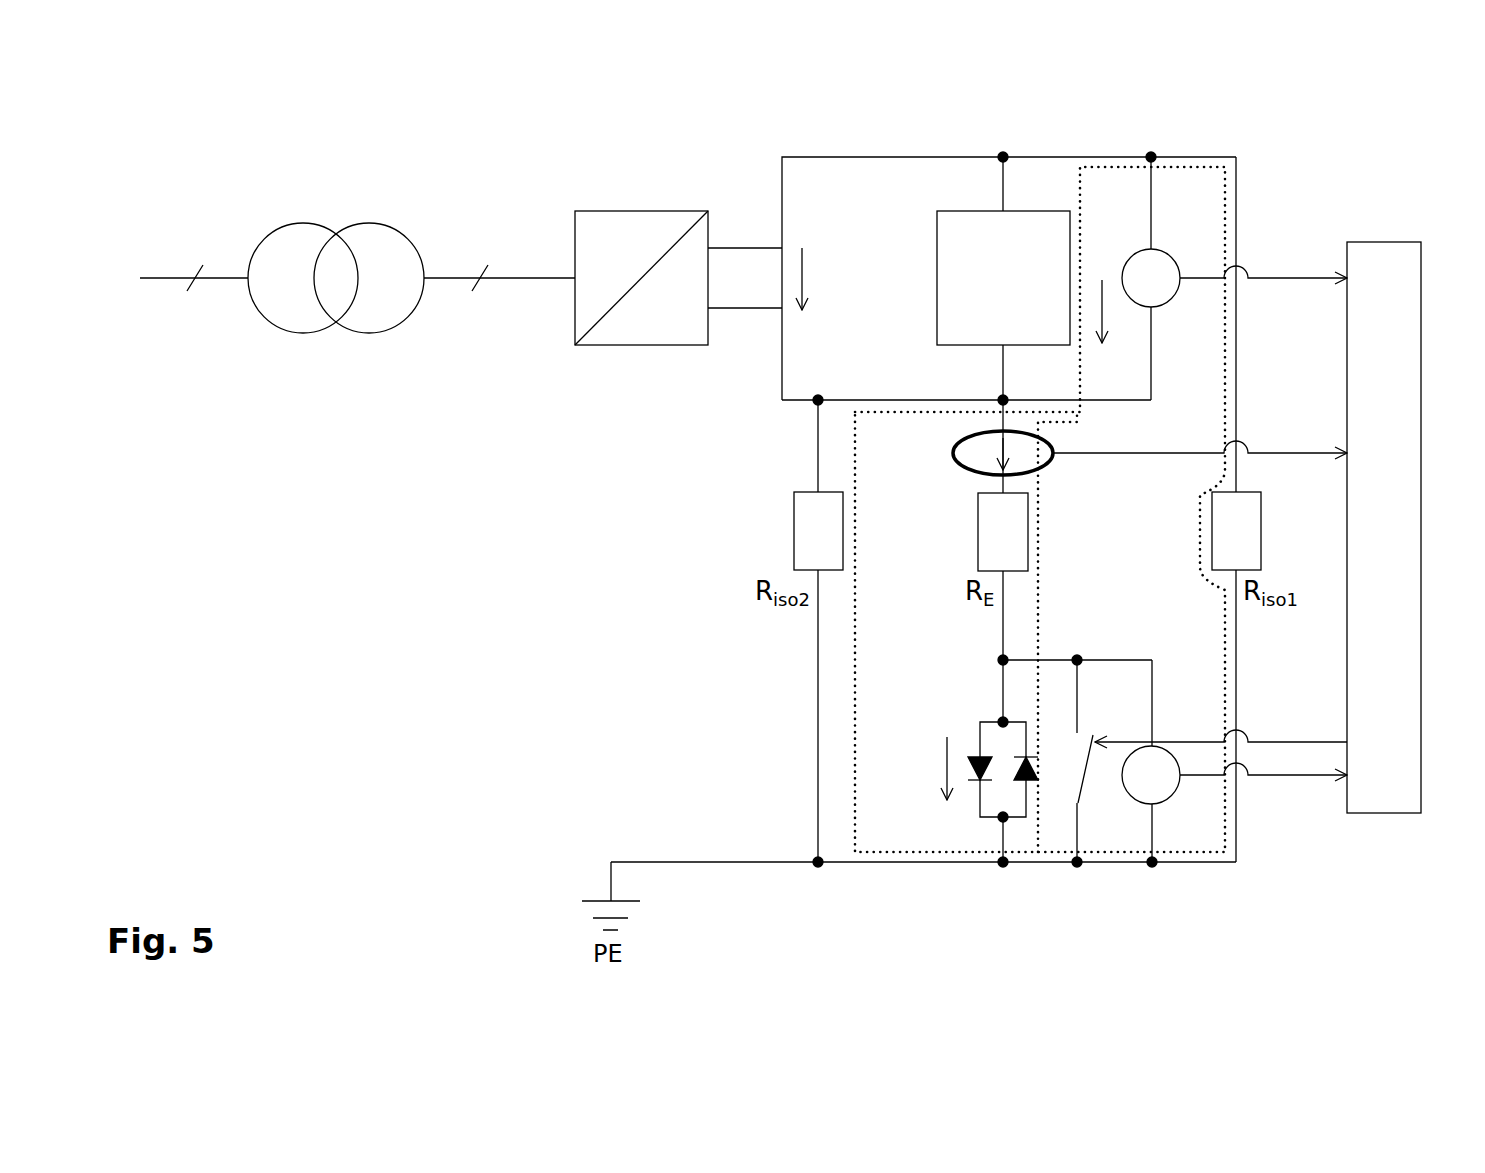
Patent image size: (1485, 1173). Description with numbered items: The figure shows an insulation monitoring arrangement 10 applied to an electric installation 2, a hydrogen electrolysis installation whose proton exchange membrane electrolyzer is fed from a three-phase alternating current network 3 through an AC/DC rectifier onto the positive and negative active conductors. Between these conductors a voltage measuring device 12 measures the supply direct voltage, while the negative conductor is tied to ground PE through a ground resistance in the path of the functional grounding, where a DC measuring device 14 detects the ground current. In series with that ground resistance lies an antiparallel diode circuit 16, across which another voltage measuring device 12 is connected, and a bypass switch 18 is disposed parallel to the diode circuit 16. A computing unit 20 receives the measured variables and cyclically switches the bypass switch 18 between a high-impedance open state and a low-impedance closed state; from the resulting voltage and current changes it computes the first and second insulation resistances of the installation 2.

The electric installation 2 is at (737, 171).
The three-phase alternating current network 3 is at (367, 230).
The insulation monitoring arrangement 10 is at (1197, 136).
The voltage measuring device 12 is at (1172, 257).
The DC measuring device 14 is at (955, 453).
The antiparallel diode circuit 16 is at (978, 819).
The bypass switch 18 is at (1083, 790).
The computing unit 20 is at (1395, 790).